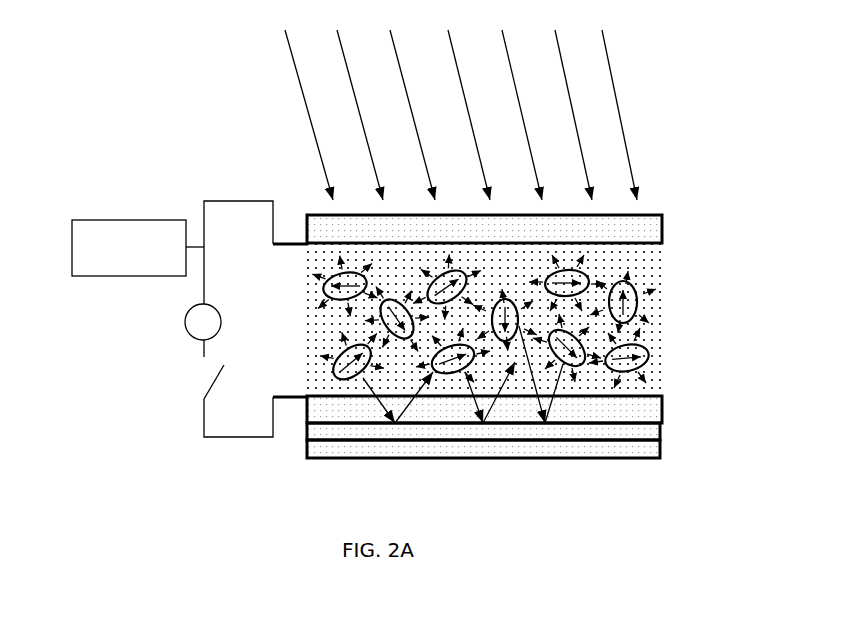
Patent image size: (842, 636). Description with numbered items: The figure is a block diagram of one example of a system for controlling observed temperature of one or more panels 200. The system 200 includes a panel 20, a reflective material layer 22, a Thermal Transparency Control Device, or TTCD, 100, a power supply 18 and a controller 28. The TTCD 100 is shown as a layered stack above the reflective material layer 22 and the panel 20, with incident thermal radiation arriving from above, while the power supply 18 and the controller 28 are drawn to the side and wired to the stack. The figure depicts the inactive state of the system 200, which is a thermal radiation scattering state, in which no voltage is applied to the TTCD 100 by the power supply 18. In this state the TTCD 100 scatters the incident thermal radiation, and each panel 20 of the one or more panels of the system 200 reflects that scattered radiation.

The system for controlling observed temperature of one or more panels 200 is at (202, 92).
The power supply 18 is at (255, 201).
The controller 28 is at (129, 248).
The Thermal Transparency Control Device 100 is at (670, 213).
The reflective material layer 22 is at (663, 431).
The panel 20 is at (305, 450).